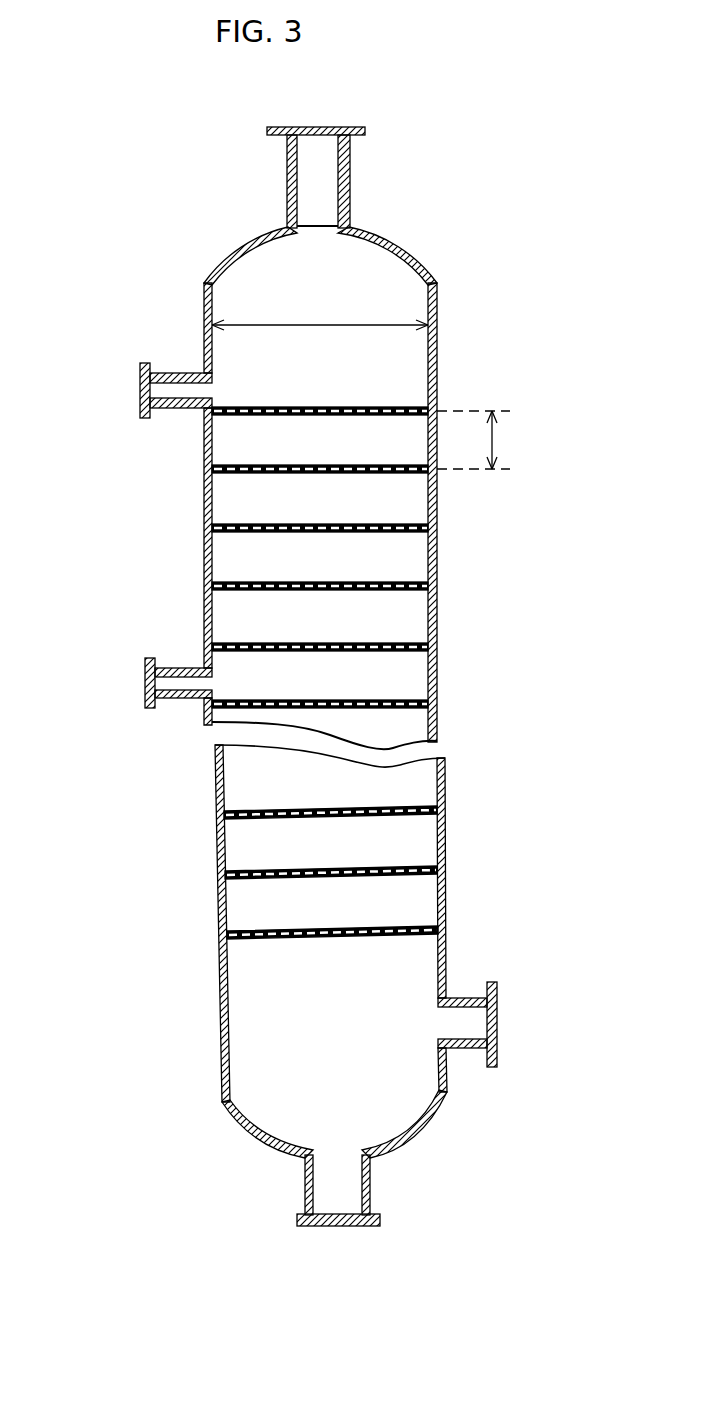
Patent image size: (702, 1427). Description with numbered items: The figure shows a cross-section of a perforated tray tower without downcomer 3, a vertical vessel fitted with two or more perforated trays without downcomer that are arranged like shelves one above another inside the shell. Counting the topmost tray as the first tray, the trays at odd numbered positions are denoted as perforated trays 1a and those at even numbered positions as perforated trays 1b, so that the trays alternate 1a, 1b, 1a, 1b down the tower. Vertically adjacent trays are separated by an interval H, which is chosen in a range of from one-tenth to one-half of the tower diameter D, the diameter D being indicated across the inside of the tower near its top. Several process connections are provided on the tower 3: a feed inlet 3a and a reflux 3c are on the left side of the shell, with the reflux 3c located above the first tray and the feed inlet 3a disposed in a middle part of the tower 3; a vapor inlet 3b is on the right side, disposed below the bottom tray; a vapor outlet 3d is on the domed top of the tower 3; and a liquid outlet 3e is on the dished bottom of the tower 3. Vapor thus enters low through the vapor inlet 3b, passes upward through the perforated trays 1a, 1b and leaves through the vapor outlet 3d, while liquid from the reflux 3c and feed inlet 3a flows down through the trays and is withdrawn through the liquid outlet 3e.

The perforated tray tower without downcomer 3 is at (450, 245).
The feed inlet 3a is at (144, 688).
The vapor inlet 3b is at (497, 1017).
The reflux 3c is at (139, 386).
The vapor outlet 3d is at (330, 127).
The liquid outlet 3e is at (358, 1227).
The perforated tray at odd numbered position 1a is at (232, 417).
The perforated tray at even numbered position 1b is at (235, 477).
The tower diameter D is at (320, 311).
The tray interval H is at (481, 440).